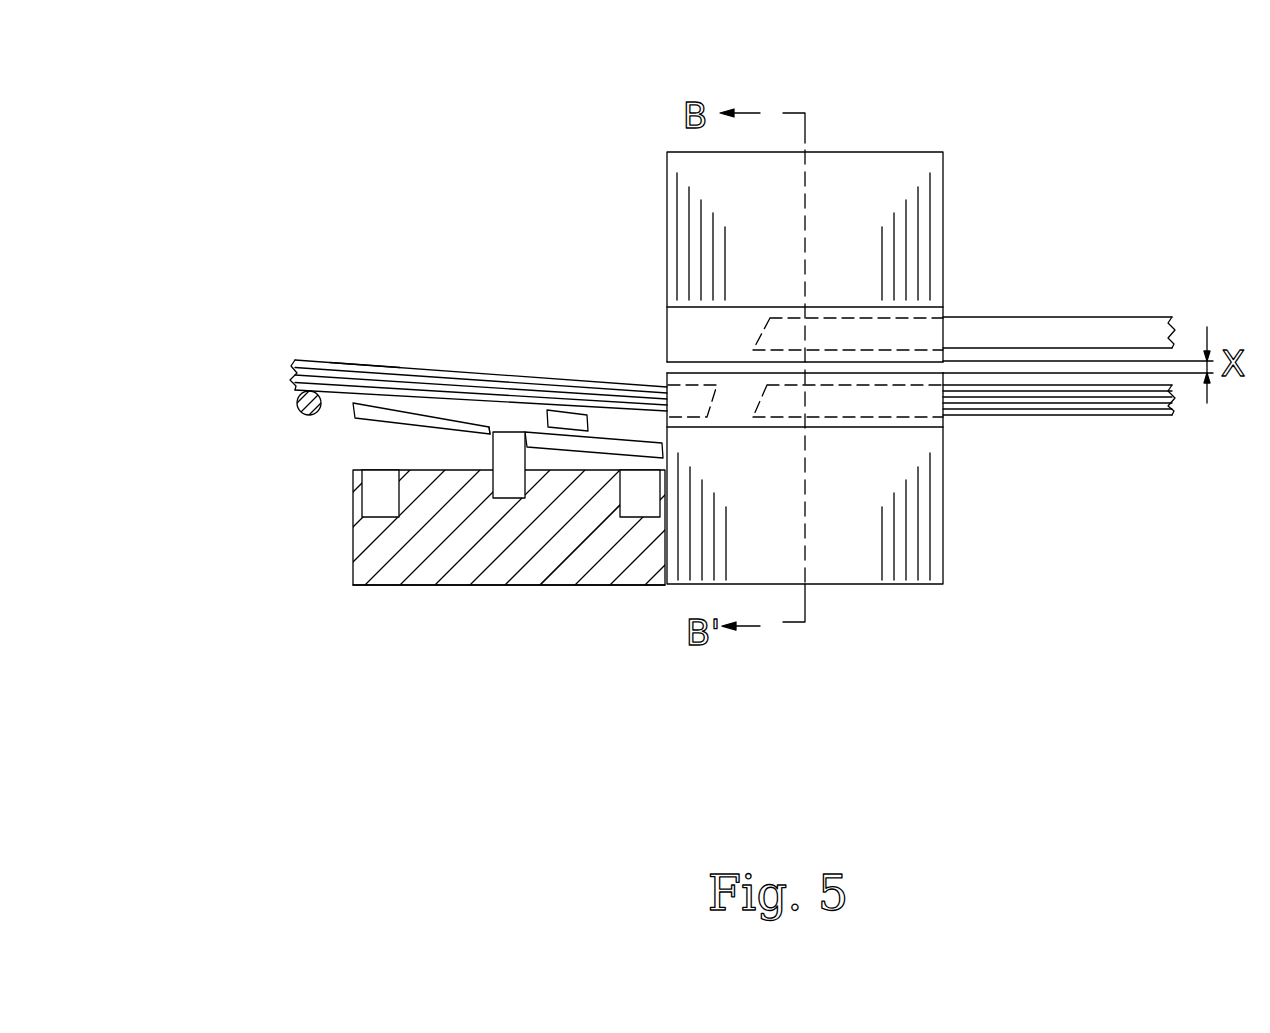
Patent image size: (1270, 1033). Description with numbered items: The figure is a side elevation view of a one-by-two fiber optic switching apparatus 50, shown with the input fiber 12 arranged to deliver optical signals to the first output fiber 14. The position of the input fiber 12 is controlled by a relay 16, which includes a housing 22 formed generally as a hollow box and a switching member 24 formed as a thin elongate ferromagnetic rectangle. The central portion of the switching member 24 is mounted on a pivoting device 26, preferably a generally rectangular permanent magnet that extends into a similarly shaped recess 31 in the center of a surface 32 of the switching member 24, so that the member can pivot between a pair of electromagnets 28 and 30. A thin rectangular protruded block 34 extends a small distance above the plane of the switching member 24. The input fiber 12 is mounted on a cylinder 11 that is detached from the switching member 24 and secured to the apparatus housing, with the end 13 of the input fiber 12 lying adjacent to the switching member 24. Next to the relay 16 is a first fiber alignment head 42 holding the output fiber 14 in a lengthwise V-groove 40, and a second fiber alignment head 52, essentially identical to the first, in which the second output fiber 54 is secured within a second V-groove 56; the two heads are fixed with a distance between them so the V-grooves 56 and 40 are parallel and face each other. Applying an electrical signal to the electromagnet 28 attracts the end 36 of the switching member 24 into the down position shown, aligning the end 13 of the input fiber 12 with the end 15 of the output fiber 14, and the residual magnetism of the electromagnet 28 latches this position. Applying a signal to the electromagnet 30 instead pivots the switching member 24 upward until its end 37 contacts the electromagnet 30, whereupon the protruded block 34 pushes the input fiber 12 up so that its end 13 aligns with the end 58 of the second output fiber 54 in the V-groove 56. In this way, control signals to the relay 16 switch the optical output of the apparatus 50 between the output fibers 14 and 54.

The fiber optic switching apparatus 50 is at (1090, 136).
The second fiber alignment head 52 is at (740, 203).
The second V-groove 56 is at (683, 307).
The end of the output fiber 58 is at (753, 348).
The fiber alignment head 42 is at (852, 504).
The V-groove 40 is at (878, 428).
The end of the output fiber 15 is at (767, 428).
The end of the input fiber 13 is at (690, 387).
The second output fiber 54 is at (1108, 317).
The output fiber 14 is at (1037, 415).
The input fiber 12 is at (303, 358).
The end of the switching member 37 is at (358, 402).
The cylinder 11 is at (296, 401).
The housing 22 is at (353, 540).
The relay 16 is at (393, 586).
The surface of the switching member 32 is at (578, 445).
The electromagnet 30 is at (360, 478).
The electromagnet 28 is at (632, 517).
The switching member 24 is at (428, 402).
The recess 31 is at (490, 423).
The end of the switching member 36 is at (657, 440).
The protruded block 34 is at (548, 410).
The pivoting device 26 is at (510, 498).